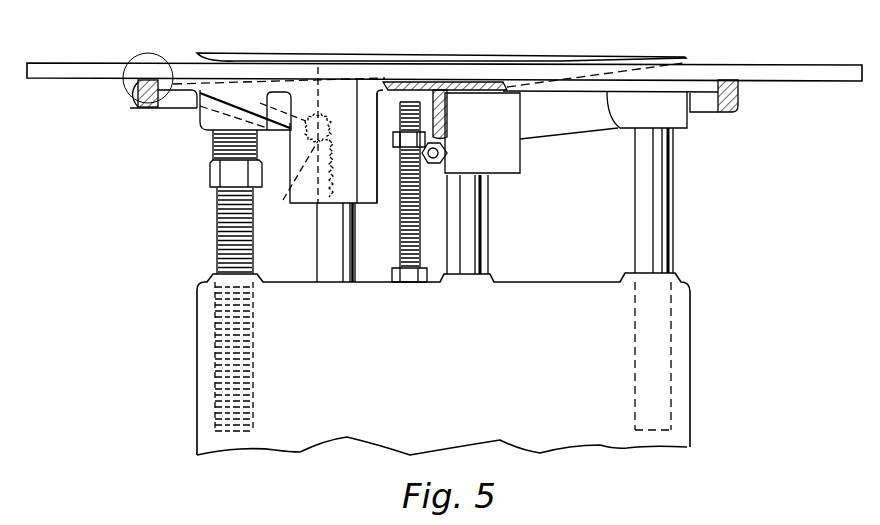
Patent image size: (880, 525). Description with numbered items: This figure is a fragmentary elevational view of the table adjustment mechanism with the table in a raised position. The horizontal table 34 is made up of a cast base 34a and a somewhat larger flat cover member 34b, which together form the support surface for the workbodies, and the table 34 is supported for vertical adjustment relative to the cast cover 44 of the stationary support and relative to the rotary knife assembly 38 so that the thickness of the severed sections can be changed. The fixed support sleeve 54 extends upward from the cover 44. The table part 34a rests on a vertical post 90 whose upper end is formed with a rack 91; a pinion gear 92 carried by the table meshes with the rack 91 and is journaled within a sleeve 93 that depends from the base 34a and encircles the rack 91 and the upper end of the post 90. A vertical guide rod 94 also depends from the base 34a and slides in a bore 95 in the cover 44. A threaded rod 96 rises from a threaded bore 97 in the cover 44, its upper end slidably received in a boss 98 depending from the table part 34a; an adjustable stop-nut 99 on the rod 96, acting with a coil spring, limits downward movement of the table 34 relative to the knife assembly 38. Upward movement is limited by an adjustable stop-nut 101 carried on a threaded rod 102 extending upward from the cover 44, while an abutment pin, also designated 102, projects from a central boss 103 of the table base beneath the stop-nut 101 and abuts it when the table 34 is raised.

The horizontal table 34 is at (847, 61).
The cast base 34a is at (738, 113).
The flat cover member 34b is at (814, 82).
The rotary knife assembly 38 is at (553, 51).
The cast cover 44 is at (560, 368).
The fixed support sleeve 54 is at (488, 223).
The vertical post 90 is at (350, 248).
The rack 91 is at (296, 197).
The pinion gear 92 is at (308, 139).
The sleeve 93 is at (311, 204).
The vertical guide rod 94 is at (676, 196).
The bore 95 is at (668, 355).
The threaded rod 96 is at (217, 241).
The threaded bore 97 is at (242, 440).
The boss 98 is at (196, 113).
The adjustable stop-nut 99 is at (210, 177).
The adjustable stop-nut 101 is at (438, 137).
The threaded rod 102 is at (448, 155).
The central boss 103 is at (521, 157).